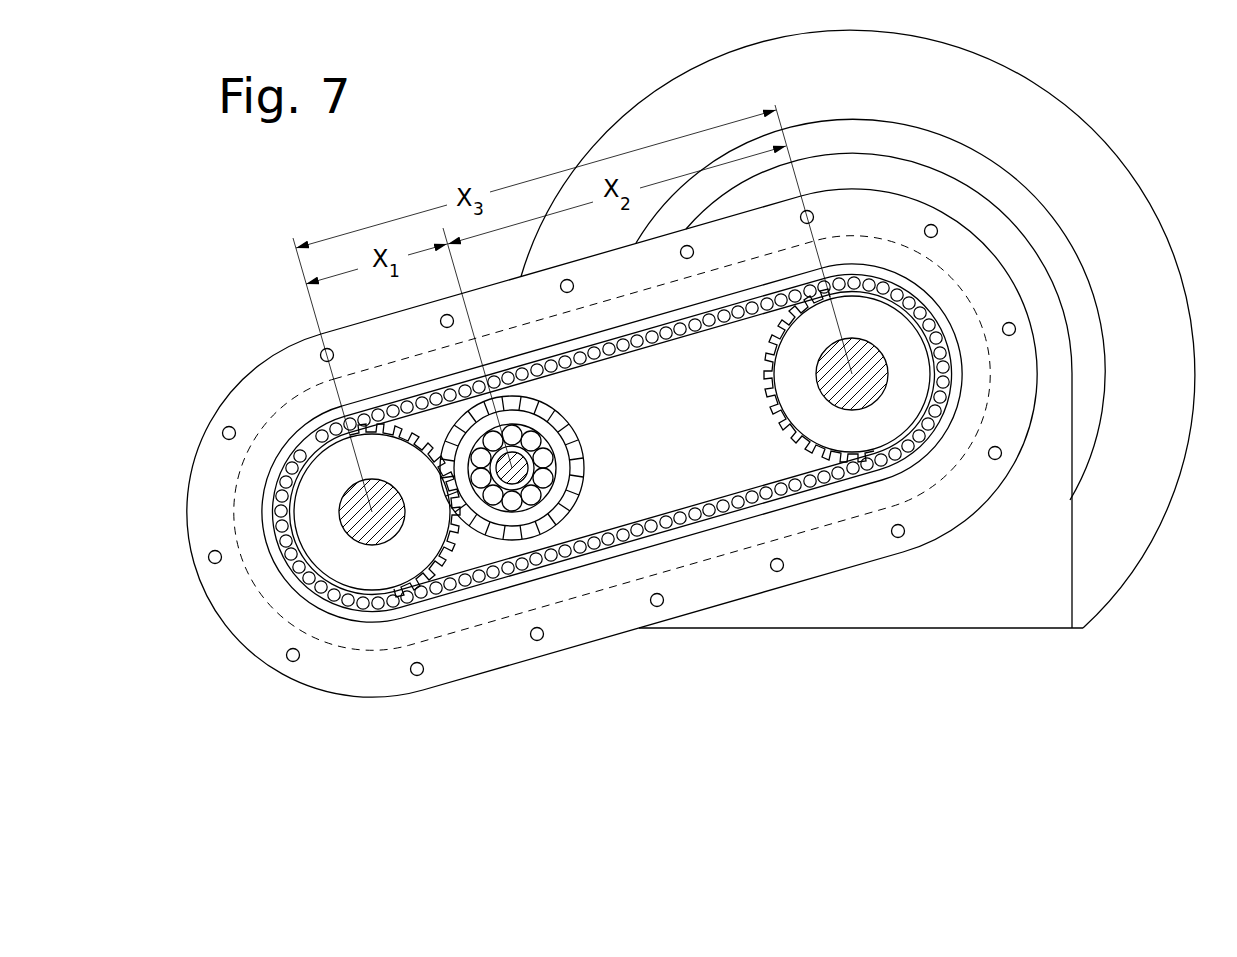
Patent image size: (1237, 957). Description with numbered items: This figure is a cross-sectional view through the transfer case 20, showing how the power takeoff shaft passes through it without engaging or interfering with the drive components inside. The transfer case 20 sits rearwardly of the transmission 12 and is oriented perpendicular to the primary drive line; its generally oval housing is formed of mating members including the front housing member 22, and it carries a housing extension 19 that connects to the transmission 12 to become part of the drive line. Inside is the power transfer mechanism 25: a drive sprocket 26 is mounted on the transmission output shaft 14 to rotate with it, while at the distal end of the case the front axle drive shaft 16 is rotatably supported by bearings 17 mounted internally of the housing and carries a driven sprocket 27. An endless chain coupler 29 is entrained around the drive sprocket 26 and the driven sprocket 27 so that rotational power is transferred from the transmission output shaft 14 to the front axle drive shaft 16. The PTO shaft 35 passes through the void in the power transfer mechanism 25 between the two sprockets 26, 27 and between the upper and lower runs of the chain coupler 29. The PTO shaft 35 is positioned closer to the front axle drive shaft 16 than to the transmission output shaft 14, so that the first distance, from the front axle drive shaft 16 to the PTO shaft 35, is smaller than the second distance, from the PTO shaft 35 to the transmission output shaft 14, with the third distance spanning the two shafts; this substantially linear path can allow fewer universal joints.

The transmission 12 is at (1093, 130).
The transmission output shaft 14 is at (872, 398).
The front axle drive shaft 16 is at (341, 512).
The bearings 17 is at (325, 468).
The housing extension 19 is at (1090, 307).
The transfer case 20 is at (938, 144).
The front housing member 22 is at (578, 522).
The power transfer mechanism 25 is at (252, 543).
The drive sprocket 26 is at (763, 397).
The driven sprocket 27 is at (440, 567).
The endless chain coupler 29 is at (690, 522).
The PTO shaft 35 is at (522, 465).